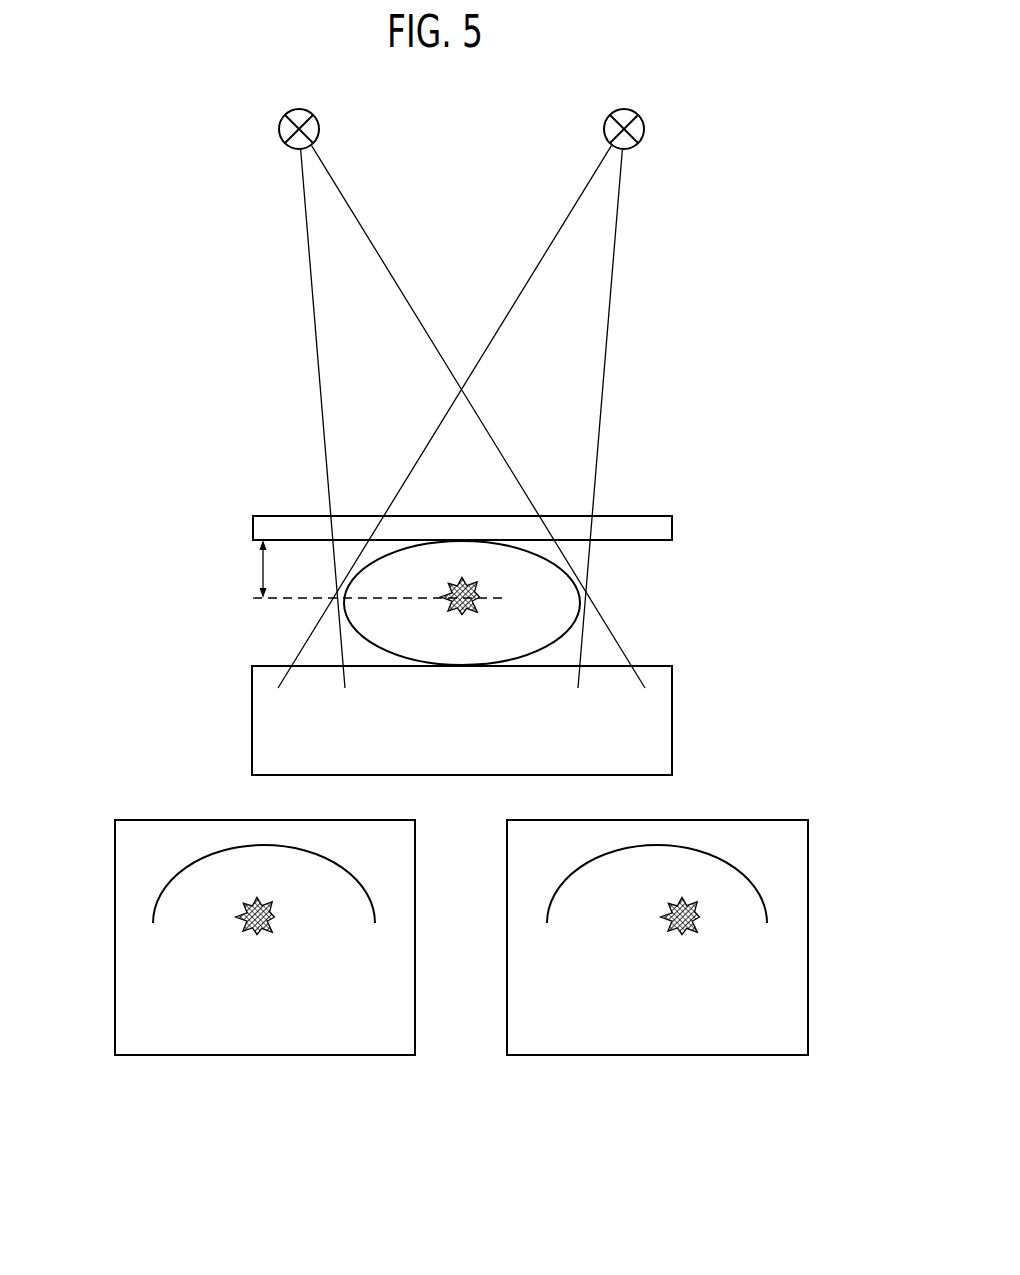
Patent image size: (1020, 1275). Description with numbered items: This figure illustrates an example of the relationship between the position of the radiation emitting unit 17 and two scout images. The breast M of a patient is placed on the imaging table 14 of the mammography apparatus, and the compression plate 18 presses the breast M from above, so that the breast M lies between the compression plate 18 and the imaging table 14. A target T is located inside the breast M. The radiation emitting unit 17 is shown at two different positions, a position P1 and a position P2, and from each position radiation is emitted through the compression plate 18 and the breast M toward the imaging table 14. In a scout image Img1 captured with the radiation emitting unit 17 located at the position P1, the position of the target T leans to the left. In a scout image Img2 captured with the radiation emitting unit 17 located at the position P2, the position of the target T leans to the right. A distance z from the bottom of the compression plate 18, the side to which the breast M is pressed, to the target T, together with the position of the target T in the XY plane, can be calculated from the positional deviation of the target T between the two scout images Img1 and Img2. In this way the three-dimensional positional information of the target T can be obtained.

The imaging table 14 is at (672, 717).
The radiation emitting unit 17 is at (279, 131).
The compression plate 18 is at (672, 527).
The breast M is at (578, 629).
The target T is at (446, 607).
The distance z is at (372, 569).
The position P1 is at (625, 91).
The position P2 is at (300, 91).
The scout image Img1 is at (372, 1056).
The scout image Img2 is at (763, 1056).